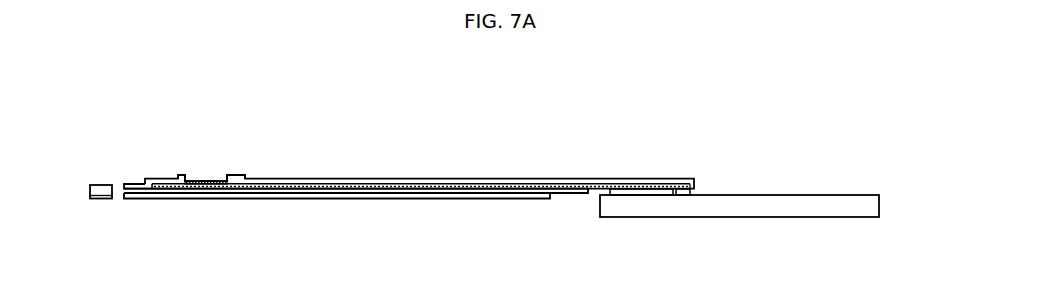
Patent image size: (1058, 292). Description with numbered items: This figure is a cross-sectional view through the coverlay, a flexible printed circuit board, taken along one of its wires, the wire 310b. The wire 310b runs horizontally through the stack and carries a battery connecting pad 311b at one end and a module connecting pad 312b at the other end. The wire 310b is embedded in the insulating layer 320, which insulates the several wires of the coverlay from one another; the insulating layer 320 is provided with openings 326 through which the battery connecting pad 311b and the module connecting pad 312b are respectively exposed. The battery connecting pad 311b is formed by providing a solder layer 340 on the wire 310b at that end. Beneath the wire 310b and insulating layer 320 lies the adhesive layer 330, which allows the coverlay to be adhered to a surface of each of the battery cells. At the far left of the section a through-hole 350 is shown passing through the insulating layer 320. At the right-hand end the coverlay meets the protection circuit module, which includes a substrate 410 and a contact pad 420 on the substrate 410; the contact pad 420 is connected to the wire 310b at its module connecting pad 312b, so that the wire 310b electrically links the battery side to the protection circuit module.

The wire 310b is at (307, 190).
The battery connecting pad 311b is at (206, 174).
The module connecting pad 312b is at (684, 204).
The insulating layer 320 is at (452, 195).
The opening 326 is at (224, 175).
The adhesive layer 330 is at (343, 200).
The solder layer 340 is at (208, 186).
The through-hole 350 is at (119, 203).
The substrate 410 is at (741, 203).
The contact pad 420 is at (626, 192).